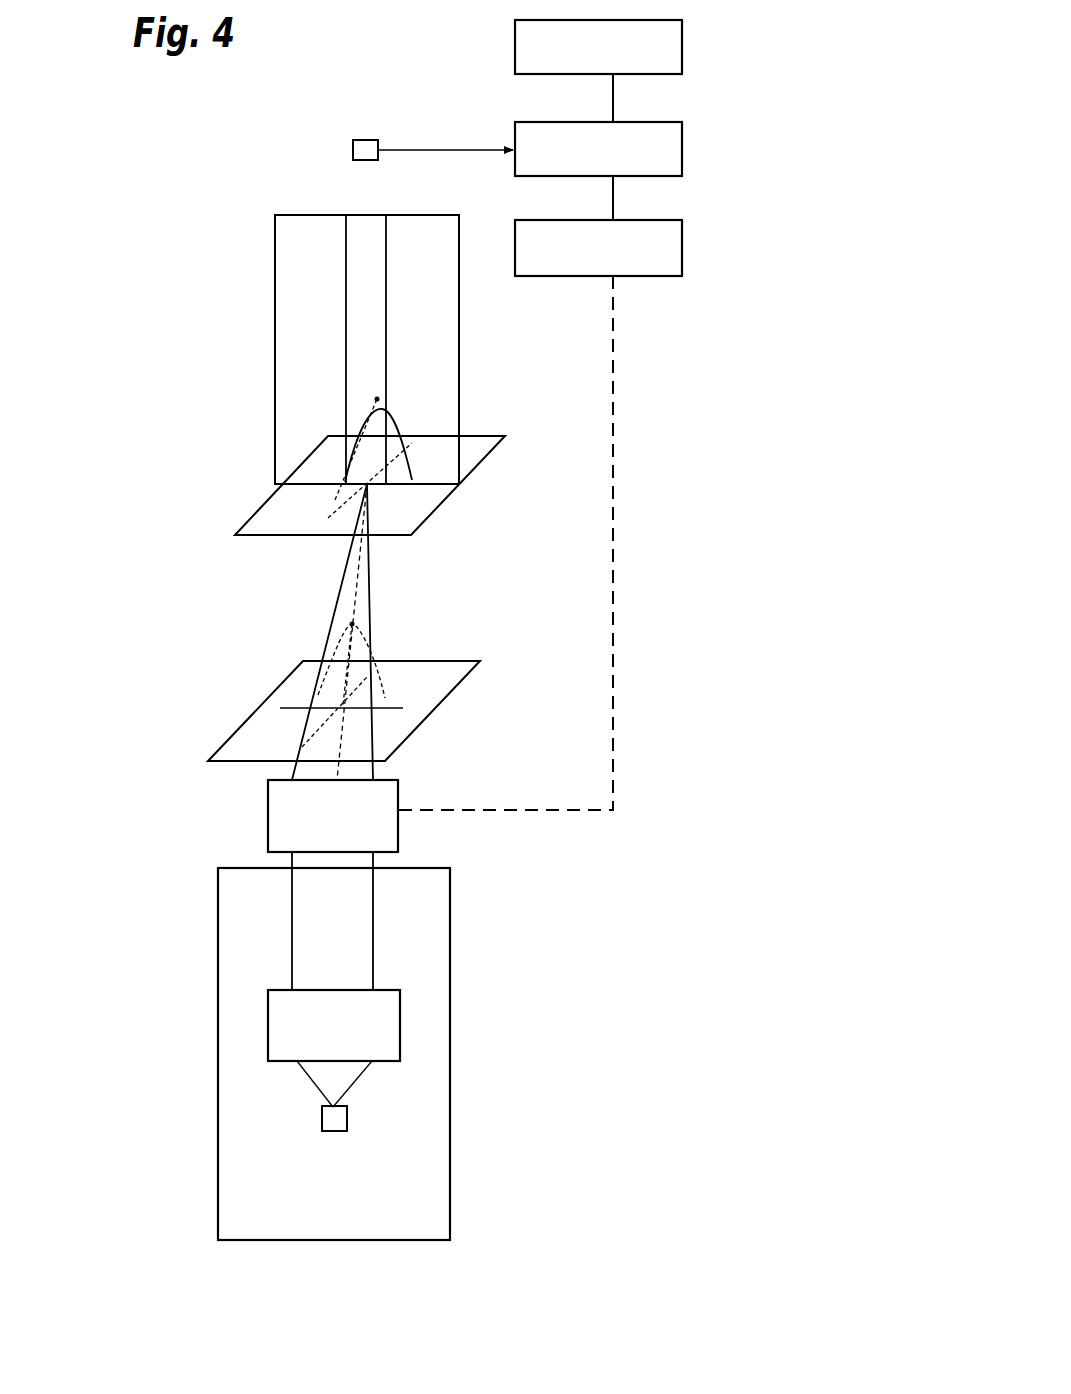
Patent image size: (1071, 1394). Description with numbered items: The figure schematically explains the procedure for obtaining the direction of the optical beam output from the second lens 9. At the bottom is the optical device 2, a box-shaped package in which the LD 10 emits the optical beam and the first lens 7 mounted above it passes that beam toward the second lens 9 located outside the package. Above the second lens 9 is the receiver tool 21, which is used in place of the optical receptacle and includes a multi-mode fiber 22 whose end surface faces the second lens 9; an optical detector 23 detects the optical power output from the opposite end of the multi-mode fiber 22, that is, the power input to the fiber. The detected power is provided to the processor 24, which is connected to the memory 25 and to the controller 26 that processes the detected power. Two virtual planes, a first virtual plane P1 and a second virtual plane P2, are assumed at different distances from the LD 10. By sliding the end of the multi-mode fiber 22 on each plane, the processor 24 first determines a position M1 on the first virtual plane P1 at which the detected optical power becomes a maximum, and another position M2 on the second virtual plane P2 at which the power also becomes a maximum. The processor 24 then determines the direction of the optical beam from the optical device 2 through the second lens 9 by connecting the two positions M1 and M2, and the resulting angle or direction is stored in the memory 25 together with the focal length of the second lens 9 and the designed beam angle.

The optical device 2 is at (178, 940).
The first lens 7 is at (400, 1013).
The second lens 9 is at (268, 803).
The LD 10 is at (347, 1113).
The receiver tool 21 is at (226, 199).
The multi-mode fiber 22 is at (298, 340).
The optical detector 23 is at (367, 140).
The processor 24 is at (682, 150).
The memory 25 is at (682, 48).
The controller 26 is at (682, 248).
The first virtual plane P1 is at (247, 745).
The second virtual plane P2 is at (482, 442).
The position of maximum optical power on the first virtual plane M1 is at (340, 704).
The position of maximum optical power on the second virtual plane M2 is at (367, 484).